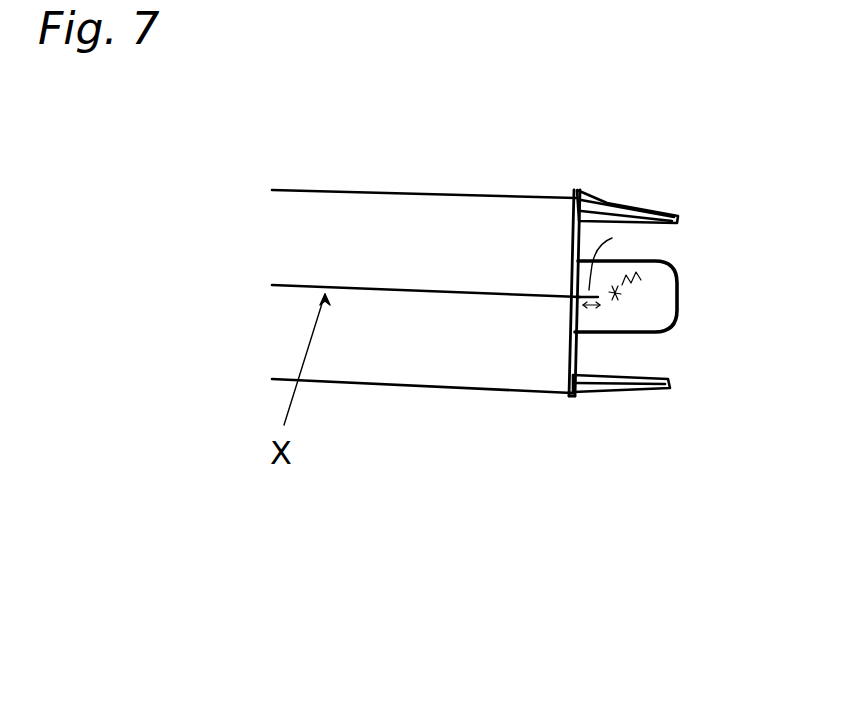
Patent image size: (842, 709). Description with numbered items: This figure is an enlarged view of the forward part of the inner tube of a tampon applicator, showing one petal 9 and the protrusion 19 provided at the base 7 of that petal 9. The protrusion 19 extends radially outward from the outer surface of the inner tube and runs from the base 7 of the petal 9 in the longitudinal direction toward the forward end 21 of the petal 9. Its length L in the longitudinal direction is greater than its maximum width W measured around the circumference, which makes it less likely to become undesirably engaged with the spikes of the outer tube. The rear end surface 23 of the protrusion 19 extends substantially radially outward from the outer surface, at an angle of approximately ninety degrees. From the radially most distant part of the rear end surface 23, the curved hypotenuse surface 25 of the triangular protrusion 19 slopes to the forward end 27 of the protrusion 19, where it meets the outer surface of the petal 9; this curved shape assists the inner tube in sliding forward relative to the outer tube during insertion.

The base of petal 7 is at (572, 253).
The petal 9 is at (680, 218).
The protrusion 19 is at (593, 191).
The forward end of petal 21 is at (679, 298).
The rear end surface of protrusion 23 is at (570, 397).
The hypotenuse surface 25 is at (572, 300).
The forward end of protrusion 27 is at (609, 204).